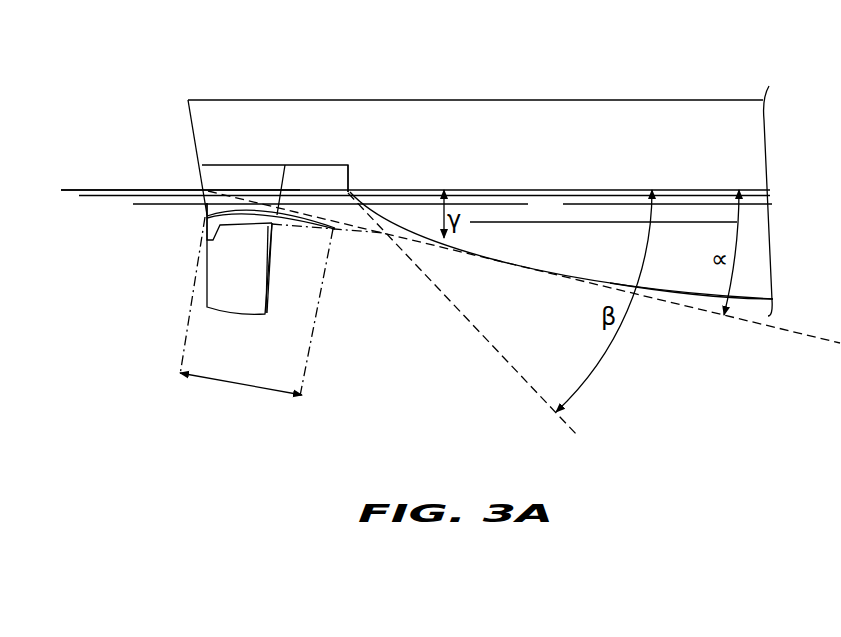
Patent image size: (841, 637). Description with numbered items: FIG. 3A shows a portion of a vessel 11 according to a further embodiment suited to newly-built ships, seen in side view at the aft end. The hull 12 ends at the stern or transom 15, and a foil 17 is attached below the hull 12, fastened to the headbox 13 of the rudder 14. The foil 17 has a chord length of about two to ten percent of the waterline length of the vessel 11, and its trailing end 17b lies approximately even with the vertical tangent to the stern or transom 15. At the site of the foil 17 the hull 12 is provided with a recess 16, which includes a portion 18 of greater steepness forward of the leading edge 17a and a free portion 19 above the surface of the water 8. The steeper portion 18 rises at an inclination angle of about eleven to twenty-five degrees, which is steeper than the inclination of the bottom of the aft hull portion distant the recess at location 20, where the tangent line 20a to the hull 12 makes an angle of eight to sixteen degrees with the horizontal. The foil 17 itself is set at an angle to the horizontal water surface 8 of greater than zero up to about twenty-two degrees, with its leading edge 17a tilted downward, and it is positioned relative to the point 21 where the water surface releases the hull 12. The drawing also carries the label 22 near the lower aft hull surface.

The surface of the water 8 is at (100, 190).
The vessel 11 is at (328, 67).
The hull 12 is at (551, 112).
The headbox 13 is at (206, 207).
The rudder 14 is at (220, 296).
The stern or transom 15 is at (188, 115).
The recess 16 is at (350, 251).
The foil 17 is at (285, 227).
The leading edge 17a is at (332, 229).
The trailing end 17b is at (206, 218).
The portion with greater steepness 18 is at (422, 233).
The free portion 19 is at (247, 165).
The location distant the recess 20 is at (495, 258).
The tangent line 20a is at (797, 332).
The point where the water surface releases the hull 21 is at (350, 190).
The lower surface 22 is at (675, 300).